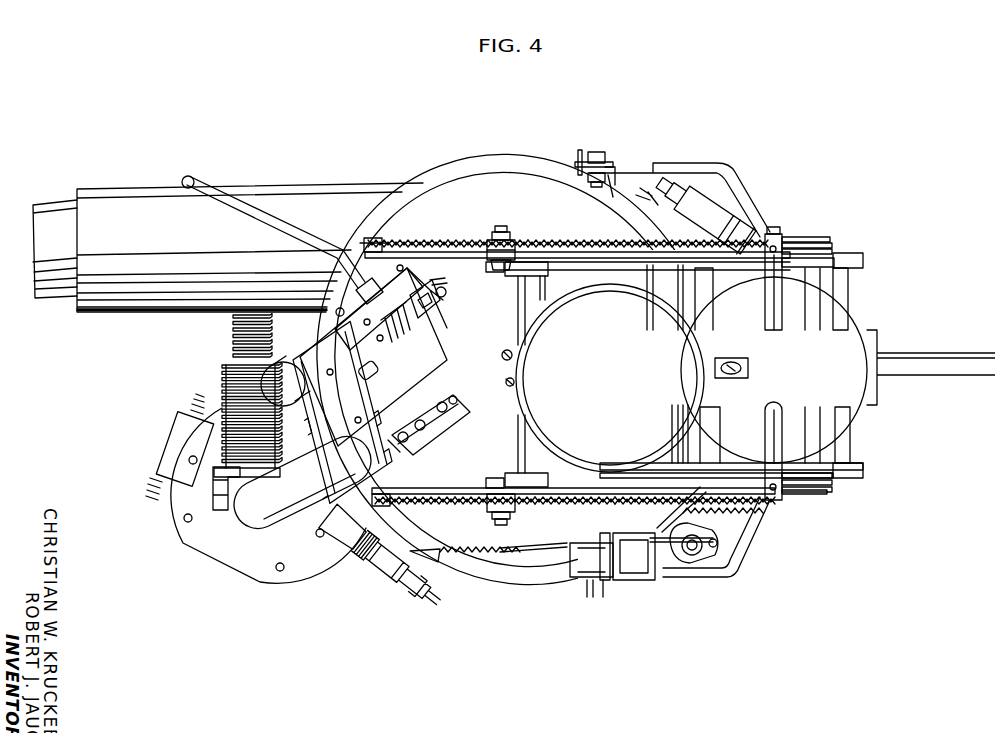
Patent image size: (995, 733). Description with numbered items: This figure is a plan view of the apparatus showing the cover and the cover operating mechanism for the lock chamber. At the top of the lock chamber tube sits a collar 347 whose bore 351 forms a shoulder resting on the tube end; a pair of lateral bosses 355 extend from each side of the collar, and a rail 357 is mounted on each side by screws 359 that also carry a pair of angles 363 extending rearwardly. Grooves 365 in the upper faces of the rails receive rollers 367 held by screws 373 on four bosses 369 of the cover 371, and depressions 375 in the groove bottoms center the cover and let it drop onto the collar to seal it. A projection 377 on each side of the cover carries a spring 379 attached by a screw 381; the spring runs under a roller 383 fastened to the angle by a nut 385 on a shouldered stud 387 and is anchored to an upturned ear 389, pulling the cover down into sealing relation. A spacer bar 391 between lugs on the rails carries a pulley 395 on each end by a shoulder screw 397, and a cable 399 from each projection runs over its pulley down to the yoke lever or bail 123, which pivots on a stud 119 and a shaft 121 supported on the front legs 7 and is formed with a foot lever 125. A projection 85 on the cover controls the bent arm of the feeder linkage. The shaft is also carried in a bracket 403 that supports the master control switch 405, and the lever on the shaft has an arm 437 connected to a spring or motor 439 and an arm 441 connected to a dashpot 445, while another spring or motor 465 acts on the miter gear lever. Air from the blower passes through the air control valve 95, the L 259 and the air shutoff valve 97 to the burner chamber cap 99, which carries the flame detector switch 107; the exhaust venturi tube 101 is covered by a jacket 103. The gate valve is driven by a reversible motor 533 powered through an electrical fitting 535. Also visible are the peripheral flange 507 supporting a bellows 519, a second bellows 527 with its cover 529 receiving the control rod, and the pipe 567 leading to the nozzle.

The front legs 7 is at (620, 165).
The projection 85 is at (710, 366).
The air control valve 95 is at (214, 492).
The air shutoff valve 97 is at (352, 478).
The burner chamber cap 99 is at (501, 350).
The exhaust venturi tube 101 is at (44, 202).
The jacket 103 is at (97, 188).
The flame detector switch 107 is at (444, 388).
The stud 119 is at (602, 150).
The shaft 121 is at (603, 592).
The yoke lever or bail 123 is at (750, 550).
The foot lever 125 is at (956, 357).
The L 259 is at (285, 520).
The collar 347 is at (524, 346).
The bore 351 is at (552, 322).
The lateral bosses 355 is at (520, 305).
The rail 357 is at (645, 305).
The screws 359 is at (560, 238).
The angles 363 is at (480, 266).
The grooves 365 is at (613, 292).
The rollers 367 is at (864, 234).
The bosses 369 is at (840, 286).
The cover 371 is at (862, 322).
The screws 373 is at (840, 235).
The depressions 375 is at (512, 283).
The projection 377 is at (782, 316).
The spring 379 is at (614, 231).
The screw 381 is at (778, 227).
The roller 383 is at (525, 234).
The nut 385 is at (501, 232).
The shouldered stud 387 is at (497, 226).
The upturned ear 389 is at (378, 236).
The spacer bar 391 is at (806, 286).
The pulley 395 is at (835, 228).
The shoulder screw 397 is at (806, 494).
The cable 399 is at (797, 240).
The bracket 403 is at (580, 540).
The master control switch 405 is at (630, 532).
The arm 437 is at (525, 548).
The spring or motor 439 is at (470, 560).
The arm 441 is at (683, 570).
The dashpot 445 is at (745, 546).
The spring or motor 465 is at (700, 520).
The peripheral flange 507 is at (220, 528).
The bellows 519 is at (223, 380).
The second bellows 527 is at (232, 338).
The cover 529 is at (232, 318).
The motor 533 is at (418, 350).
The electrical fitting 535 is at (430, 308).
The pipe 567 is at (308, 210).